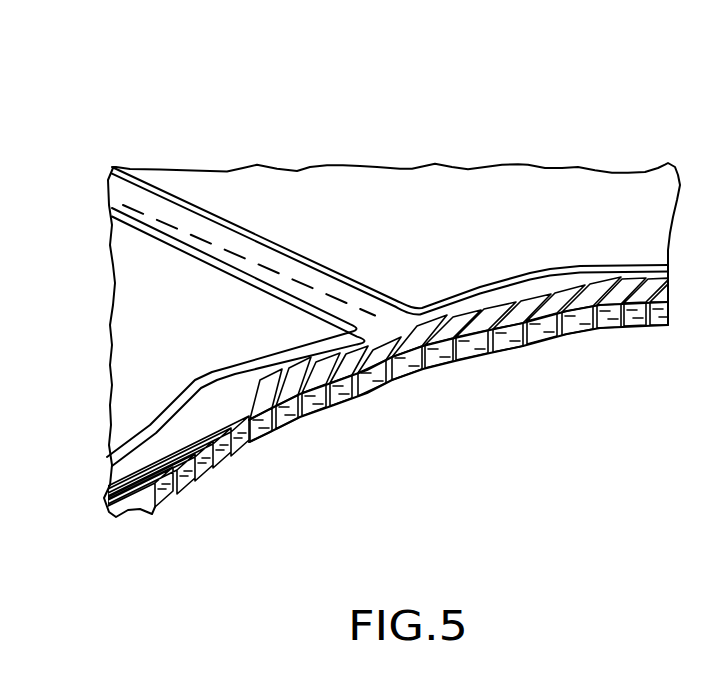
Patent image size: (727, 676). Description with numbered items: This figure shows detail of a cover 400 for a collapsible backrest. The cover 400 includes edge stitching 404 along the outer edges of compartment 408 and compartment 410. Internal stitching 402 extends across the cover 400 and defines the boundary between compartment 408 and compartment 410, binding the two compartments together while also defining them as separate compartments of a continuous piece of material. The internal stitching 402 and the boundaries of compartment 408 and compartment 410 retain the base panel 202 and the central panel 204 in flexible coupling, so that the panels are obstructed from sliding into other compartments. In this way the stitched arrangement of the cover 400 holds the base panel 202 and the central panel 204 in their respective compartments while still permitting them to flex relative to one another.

The cover 400 is at (119, 105).
The internal stitching 402 is at (118, 202).
The compartment 410 is at (278, 202).
The central panel 204 is at (362, 177).
The base panel 202 is at (125, 307).
The compartment 408 is at (133, 362).
The edge stitching 404 is at (127, 488).